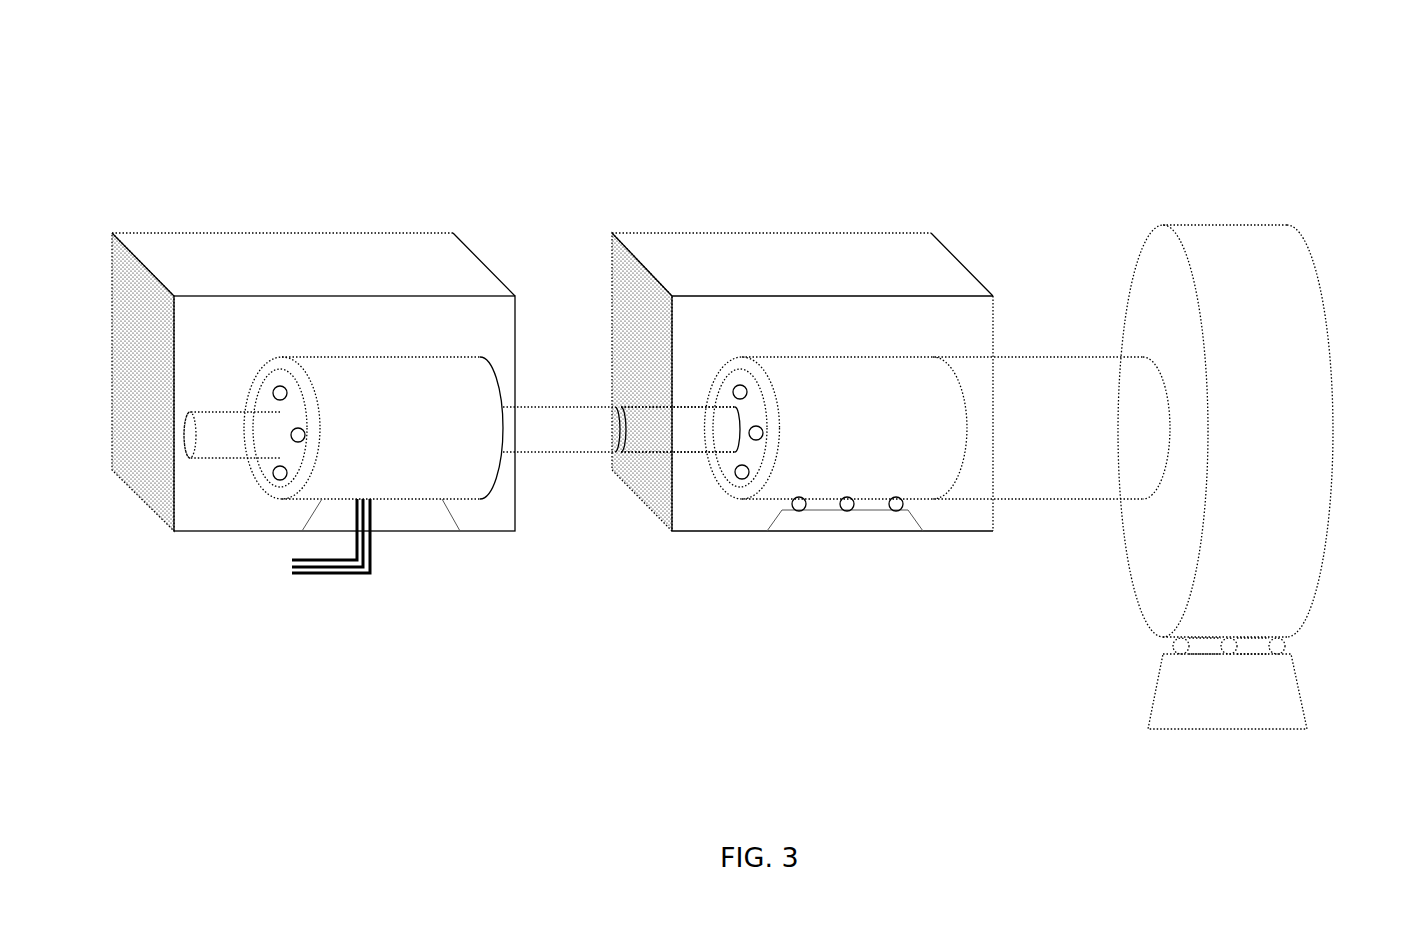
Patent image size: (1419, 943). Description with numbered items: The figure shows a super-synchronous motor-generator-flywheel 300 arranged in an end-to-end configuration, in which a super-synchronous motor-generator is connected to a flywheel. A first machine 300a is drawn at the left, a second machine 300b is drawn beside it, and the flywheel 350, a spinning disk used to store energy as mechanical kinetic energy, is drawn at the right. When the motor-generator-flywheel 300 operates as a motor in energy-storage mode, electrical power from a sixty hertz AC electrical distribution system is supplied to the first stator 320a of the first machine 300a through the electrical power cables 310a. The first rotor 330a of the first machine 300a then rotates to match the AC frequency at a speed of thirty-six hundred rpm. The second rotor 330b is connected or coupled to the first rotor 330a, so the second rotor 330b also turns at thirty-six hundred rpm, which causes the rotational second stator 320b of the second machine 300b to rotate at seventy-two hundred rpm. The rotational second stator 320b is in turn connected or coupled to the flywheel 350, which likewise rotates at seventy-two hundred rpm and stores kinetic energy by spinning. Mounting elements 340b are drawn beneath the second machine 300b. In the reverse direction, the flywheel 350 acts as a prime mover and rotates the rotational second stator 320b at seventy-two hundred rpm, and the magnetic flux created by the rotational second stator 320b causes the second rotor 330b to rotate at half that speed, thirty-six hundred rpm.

The super-synchronous motor-generator-flywheel 300 is at (418, 50).
The first machine 300a is at (260, 210).
The second machine 300b is at (708, 210).
The electrical power cables 310a is at (328, 576).
The first stator 320a is at (472, 499).
The first rotor 330a is at (215, 458).
The rotational second stator 320b is at (918, 503).
The second rotor 330b is at (637, 452).
The mounting bolts 340b is at (803, 507).
The flywheel 350 is at (1312, 600).